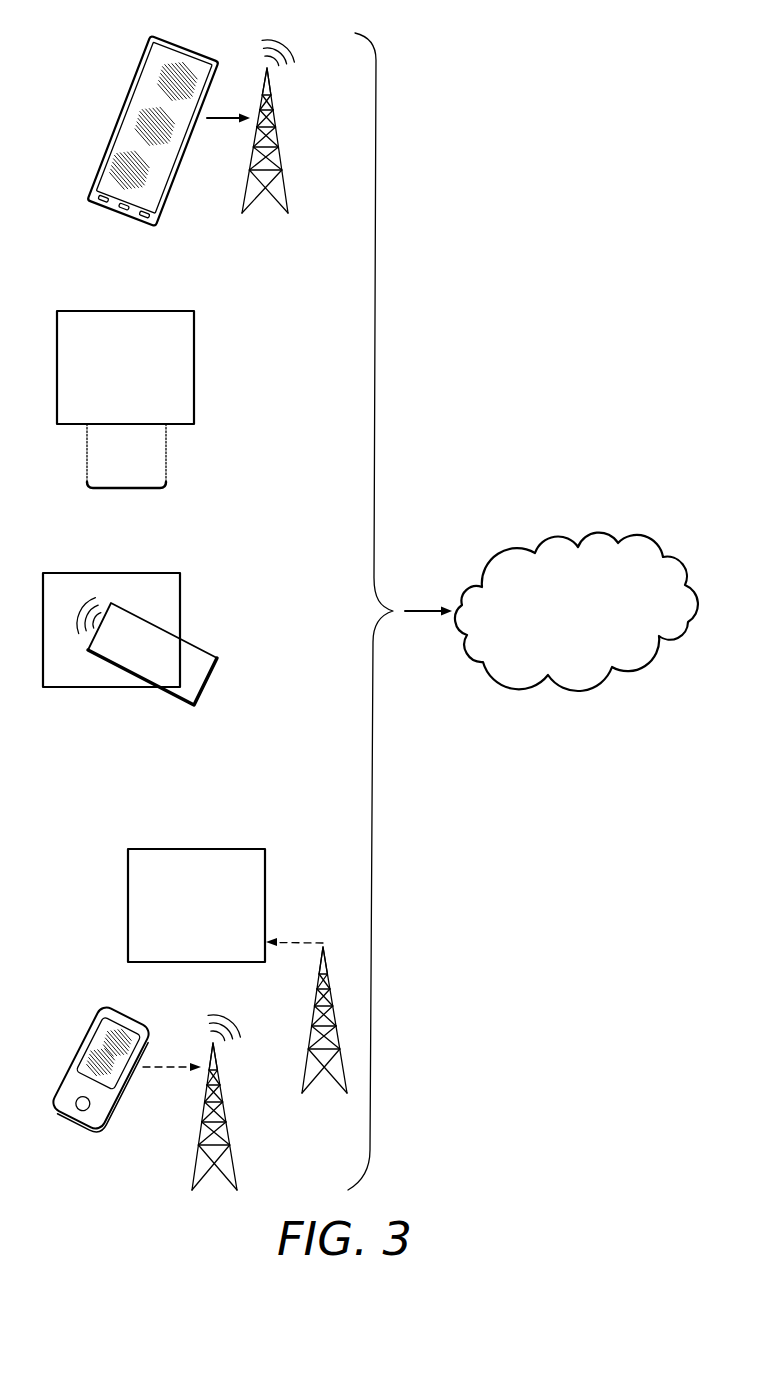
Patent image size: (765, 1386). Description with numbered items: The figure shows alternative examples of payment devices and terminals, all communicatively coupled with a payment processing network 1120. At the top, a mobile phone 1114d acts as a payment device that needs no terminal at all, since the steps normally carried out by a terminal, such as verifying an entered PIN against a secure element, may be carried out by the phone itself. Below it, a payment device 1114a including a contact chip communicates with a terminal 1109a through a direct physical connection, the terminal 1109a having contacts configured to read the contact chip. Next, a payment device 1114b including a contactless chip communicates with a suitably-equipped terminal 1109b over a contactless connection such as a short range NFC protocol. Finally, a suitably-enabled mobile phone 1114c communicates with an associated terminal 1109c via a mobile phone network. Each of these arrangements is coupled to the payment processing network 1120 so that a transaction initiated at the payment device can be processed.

The mobile phone 1114d is at (148, 87).
The terminal 1109a is at (161, 378).
The payment device 1114a is at (165, 470).
The terminal 1109b is at (182, 586).
The payment device 1114b is at (178, 703).
The terminal 1109c is at (231, 915).
The mobile phone 1114c is at (97, 1043).
The payment processing network 1120 is at (604, 623).